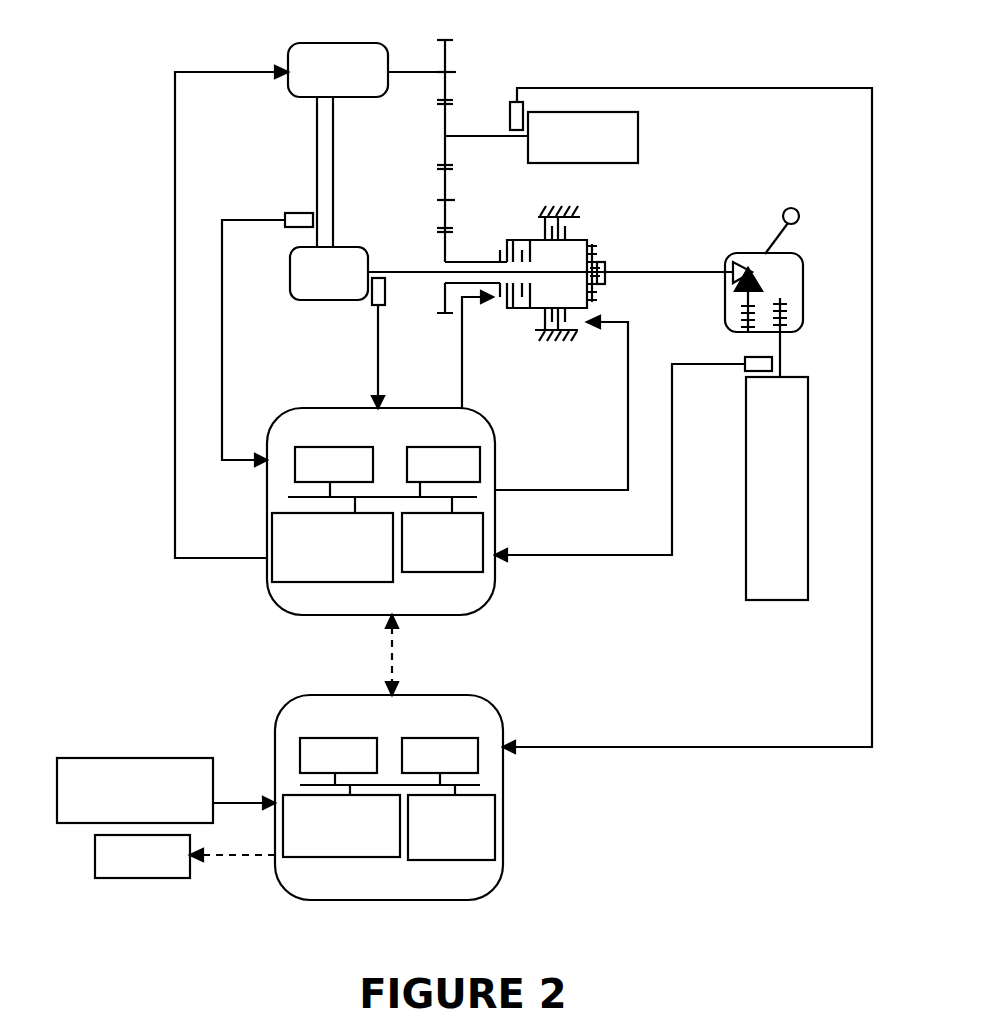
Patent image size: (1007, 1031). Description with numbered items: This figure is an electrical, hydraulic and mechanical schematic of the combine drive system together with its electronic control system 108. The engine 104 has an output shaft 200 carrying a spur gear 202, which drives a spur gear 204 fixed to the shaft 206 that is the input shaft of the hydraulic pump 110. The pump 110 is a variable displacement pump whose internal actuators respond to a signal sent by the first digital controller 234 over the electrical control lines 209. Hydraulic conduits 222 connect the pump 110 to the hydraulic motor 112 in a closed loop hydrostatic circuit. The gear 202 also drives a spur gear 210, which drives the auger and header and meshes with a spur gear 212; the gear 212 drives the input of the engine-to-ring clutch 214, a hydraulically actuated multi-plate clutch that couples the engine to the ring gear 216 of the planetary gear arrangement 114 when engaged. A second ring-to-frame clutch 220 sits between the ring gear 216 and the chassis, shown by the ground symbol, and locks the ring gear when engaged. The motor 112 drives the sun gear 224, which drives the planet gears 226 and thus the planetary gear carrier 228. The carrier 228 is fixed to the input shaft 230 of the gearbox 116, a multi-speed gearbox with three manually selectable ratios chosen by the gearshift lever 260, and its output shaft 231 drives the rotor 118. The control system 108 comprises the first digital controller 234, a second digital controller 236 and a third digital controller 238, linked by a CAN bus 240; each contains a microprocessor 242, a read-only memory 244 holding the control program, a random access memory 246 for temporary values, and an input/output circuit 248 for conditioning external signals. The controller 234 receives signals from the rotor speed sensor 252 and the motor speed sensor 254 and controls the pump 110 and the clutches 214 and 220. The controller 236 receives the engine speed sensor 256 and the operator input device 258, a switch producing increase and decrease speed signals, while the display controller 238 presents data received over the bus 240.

The engine 104 is at (638, 130).
The electronic control system 108 is at (590, 880).
The hydraulic pump 110 is at (329, 44).
The hydraulic motor 112 is at (292, 293).
The planetary gear arrangement 114 is at (640, 192).
The gearbox 116 is at (803, 256).
The rotor 118 is at (748, 487).
The output shaft 200 is at (468, 136).
The spur gear 202 is at (445, 137).
The spur gear 204 is at (445, 70).
The shaft 206 is at (413, 78).
The electrical control lines 209 is at (177, 192).
The spur gear 210 is at (440, 192).
The spur gear 212 is at (447, 254).
The engine-to-ring clutch 214 is at (505, 308).
The ring gear 216 is at (600, 306).
The ring-to-frame clutch 220 is at (580, 230).
The hydraulic conduits 222 is at (317, 163).
The sun gear 224 is at (604, 268).
The planet gears 226 is at (598, 289).
The planetary gear carrier 228 is at (600, 279).
The input shaft 230 is at (700, 266).
The output shaft 231 is at (782, 346).
The first digital controller 234 is at (267, 598).
The second digital controller 236 is at (277, 711).
The third digital controller 238 is at (95, 842).
The CAN bus 240 is at (392, 652).
The microprocessor 242 is at (337, 582).
The read-only memory 244 is at (470, 447).
The random access memory 246 is at (365, 447).
The input/output circuit 248 is at (433, 572).
The rotor speed sensor 252 is at (740, 372).
The motor speed sensor 254 is at (387, 300).
The engine speed sensor 256 is at (510, 120).
The operator input device 258 is at (80, 758).
The gearshift lever 260 is at (778, 210).